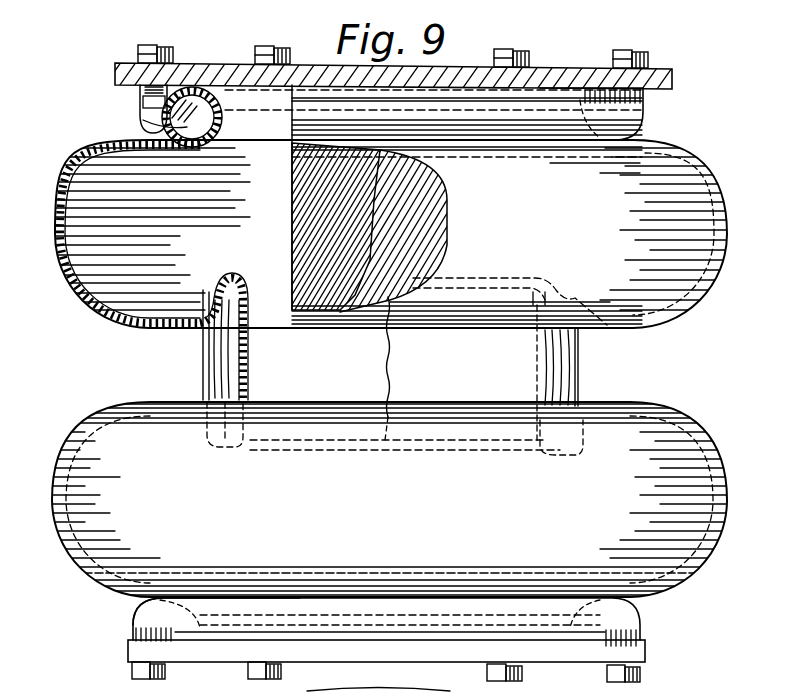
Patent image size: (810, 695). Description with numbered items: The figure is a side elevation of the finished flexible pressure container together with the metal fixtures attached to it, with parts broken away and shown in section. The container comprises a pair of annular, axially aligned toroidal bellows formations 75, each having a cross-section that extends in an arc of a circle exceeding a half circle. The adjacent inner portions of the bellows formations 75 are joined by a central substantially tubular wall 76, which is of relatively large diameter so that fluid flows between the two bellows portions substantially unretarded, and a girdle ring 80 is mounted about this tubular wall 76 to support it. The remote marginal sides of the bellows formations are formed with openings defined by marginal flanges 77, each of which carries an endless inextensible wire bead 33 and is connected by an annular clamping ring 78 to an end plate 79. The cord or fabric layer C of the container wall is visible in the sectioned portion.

The bead 33 is at (165, 127).
The toroidal bellows formation 75 is at (56, 212).
The central tubular wall 76 is at (243, 331).
The marginal flange 77 is at (136, 611).
The annular clamping ring 78 is at (644, 125).
The end plate 79 is at (671, 89).
The girdle ring 80 is at (233, 325).
The cord fabric layer C is at (112, 322).